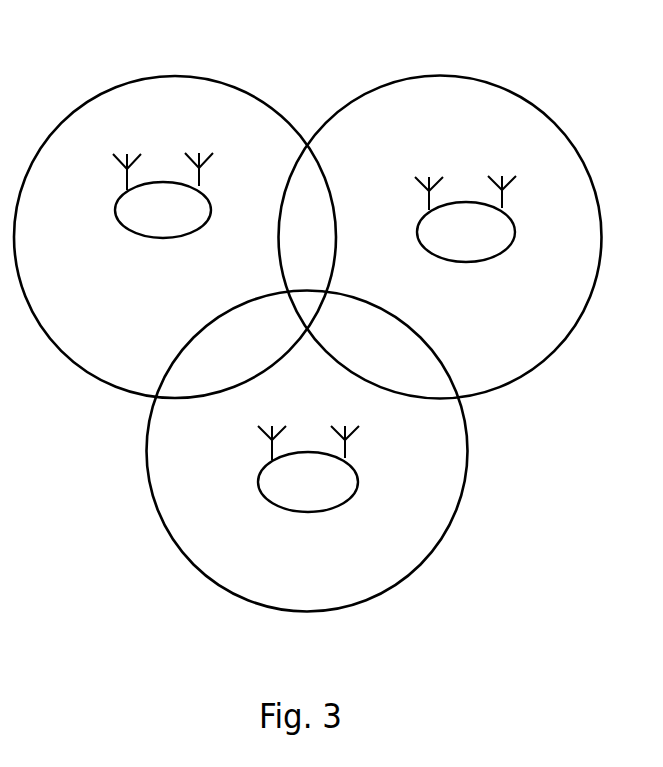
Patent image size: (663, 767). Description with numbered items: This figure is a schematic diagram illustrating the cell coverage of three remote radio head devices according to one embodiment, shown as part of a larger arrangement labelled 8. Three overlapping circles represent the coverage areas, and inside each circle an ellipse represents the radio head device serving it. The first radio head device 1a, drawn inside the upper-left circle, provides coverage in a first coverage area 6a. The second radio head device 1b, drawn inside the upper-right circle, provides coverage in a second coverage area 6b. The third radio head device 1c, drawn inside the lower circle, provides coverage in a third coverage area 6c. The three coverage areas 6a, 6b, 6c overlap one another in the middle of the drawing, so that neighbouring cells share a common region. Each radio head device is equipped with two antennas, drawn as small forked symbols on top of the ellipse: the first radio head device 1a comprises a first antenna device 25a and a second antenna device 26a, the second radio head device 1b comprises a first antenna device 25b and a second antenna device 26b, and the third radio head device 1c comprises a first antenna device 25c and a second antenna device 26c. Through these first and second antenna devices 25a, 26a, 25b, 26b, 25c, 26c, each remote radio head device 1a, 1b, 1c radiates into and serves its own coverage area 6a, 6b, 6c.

The cellular communication system / network 8 is at (88, 104).
The first coverage area 6a is at (265, 101).
The second coverage area 6b is at (492, 83).
The third coverage area 6c is at (467, 463).
The first radio head device 1a is at (178, 223).
The second radio head device 1b is at (481, 245).
The third radio head device 1c is at (323, 495).
The first antenna device 25a is at (126, 183).
The second antenna device 26a is at (201, 177).
The first antenna device 25b is at (427, 203).
The second antenna device 26b is at (504, 199).
The first antenna device 25c is at (270, 456).
The second antenna device 26c is at (347, 451).